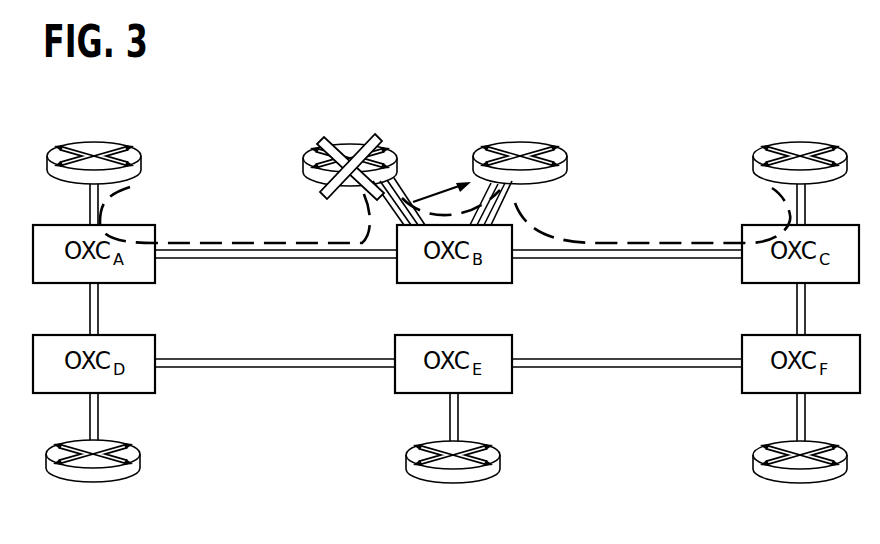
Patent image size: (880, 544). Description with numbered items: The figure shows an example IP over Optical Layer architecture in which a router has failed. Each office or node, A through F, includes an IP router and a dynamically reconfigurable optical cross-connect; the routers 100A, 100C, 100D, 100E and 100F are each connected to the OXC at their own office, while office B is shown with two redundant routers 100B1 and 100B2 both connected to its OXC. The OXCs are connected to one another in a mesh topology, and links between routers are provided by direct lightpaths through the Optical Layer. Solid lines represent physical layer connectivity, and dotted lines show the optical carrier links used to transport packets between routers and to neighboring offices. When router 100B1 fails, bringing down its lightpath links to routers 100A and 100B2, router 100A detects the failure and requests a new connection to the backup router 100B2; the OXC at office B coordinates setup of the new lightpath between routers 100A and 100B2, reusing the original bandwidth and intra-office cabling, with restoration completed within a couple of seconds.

The IP router 100A is at (94, 141).
The IP router 100B1 is at (350, 149).
The IP router 100B2 is at (520, 141).
The IP router 100C is at (800, 141).
The IP router 100D is at (93, 485).
The IP router 100E is at (453, 485).
The IP router 100F is at (800, 485).